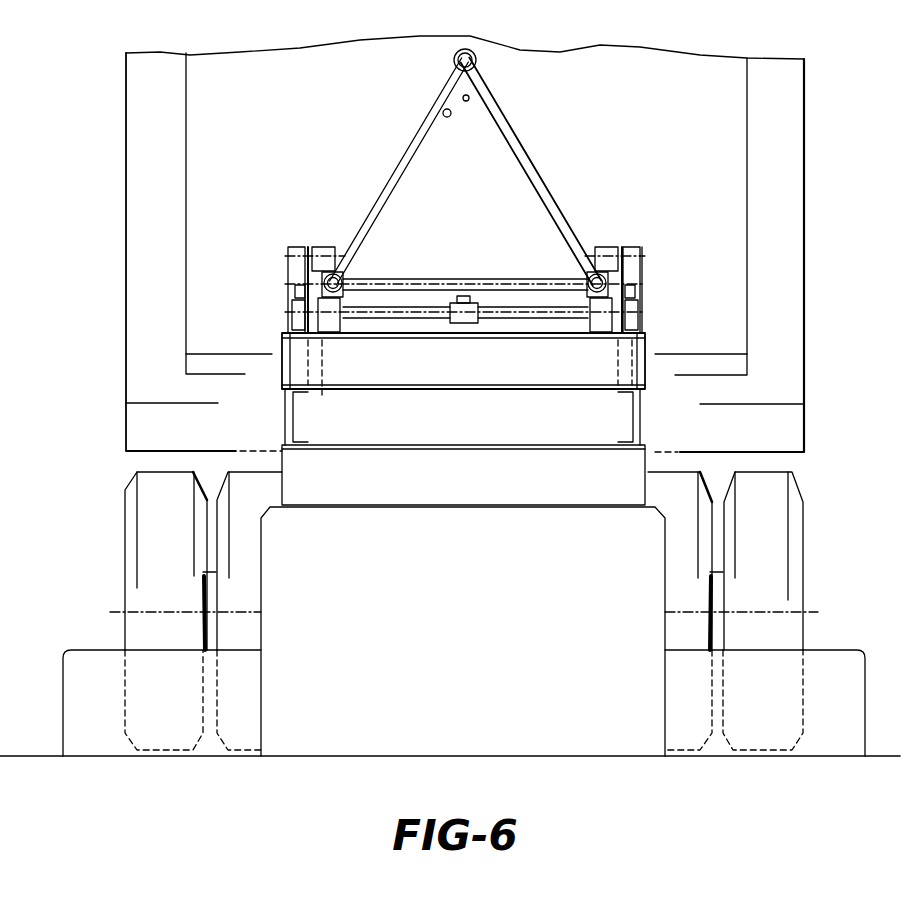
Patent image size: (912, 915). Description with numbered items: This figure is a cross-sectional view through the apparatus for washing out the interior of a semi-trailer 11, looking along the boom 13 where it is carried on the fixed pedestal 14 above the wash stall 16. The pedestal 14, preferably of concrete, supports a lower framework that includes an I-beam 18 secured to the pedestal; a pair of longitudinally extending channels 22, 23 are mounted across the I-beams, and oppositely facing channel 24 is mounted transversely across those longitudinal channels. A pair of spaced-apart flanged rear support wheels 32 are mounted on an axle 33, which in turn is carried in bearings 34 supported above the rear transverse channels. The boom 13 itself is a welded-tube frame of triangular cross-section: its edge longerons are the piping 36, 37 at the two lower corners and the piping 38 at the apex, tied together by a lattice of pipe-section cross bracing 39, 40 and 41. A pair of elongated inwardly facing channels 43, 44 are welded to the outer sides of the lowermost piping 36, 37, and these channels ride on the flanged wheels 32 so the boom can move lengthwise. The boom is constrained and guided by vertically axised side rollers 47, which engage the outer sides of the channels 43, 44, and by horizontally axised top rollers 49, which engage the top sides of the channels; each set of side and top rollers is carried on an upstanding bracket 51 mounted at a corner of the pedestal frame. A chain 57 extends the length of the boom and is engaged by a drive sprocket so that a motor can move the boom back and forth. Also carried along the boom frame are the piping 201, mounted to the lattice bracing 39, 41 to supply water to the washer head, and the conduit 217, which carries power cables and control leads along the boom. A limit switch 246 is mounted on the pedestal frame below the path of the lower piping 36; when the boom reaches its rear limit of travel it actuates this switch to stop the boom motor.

The semi-trailer 11 is at (802, 104).
The boom 13 is at (466, 149).
The pedestal 14 is at (470, 672).
The wash stall 16 is at (75, 656).
The I-beam 18 is at (487, 492).
The longitudinal channel 22 is at (286, 417).
The longitudinal channel 23 is at (638, 418).
The channel 24 is at (536, 386).
The rear support wheel 32 is at (337, 330).
The axle 33 is at (525, 320).
The bearing 34 is at (300, 310).
The piping 36 is at (343, 280).
The piping 37 is at (588, 281).
The piping 38 is at (470, 50).
The cross bracing 39 is at (398, 181).
The cross bracing 40 is at (444, 279).
The cross bracing 41 is at (532, 184).
The channel 43 is at (312, 284).
The channel 44 is at (620, 286).
The side roller 47 is at (295, 291).
The top roller 49 is at (345, 247).
The upstanding bracket 51 is at (630, 326).
The chain 57 is at (465, 296).
The piping 201 is at (447, 117).
The conduit 217 is at (470, 97).
The limit switch 246 is at (341, 378).